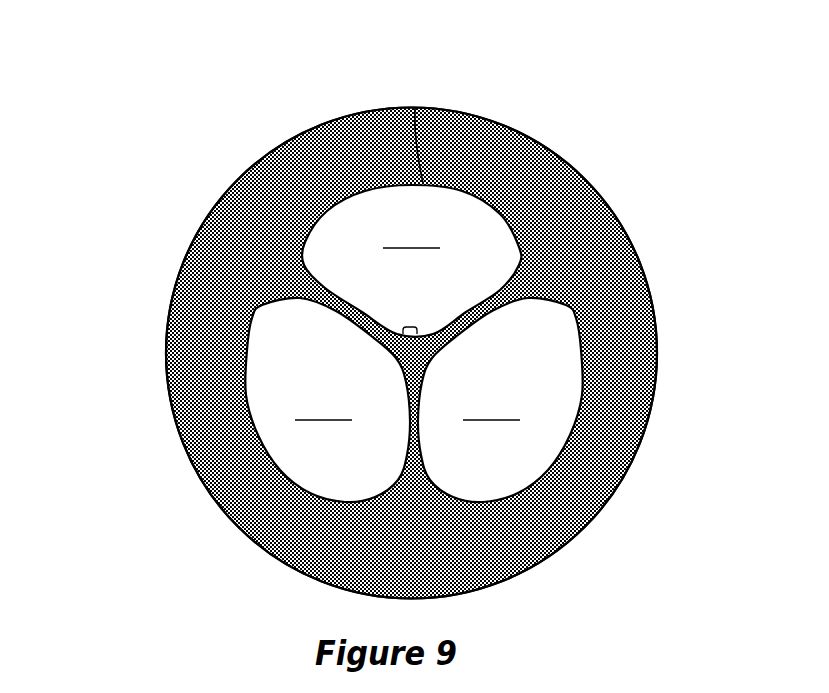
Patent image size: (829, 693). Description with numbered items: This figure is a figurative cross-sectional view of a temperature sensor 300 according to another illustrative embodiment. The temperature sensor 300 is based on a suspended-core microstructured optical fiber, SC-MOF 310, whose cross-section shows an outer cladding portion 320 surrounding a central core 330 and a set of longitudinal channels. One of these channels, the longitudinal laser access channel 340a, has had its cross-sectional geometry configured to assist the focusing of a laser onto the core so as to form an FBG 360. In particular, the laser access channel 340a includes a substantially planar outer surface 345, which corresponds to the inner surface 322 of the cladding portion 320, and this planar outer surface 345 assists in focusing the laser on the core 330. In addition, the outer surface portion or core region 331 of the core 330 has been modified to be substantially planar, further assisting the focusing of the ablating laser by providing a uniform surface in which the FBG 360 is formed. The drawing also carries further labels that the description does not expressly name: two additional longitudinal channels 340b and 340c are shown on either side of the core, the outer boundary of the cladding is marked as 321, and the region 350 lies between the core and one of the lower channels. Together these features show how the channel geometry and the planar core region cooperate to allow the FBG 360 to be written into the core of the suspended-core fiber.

The temperature sensor 300 is at (180, 168).
The SC-MOF 310 is at (560, 148).
The cladding portion 320 is at (603, 250).
The outer layer of wall 321 is at (322, 123).
The inner surface of the cladding portion 322 is at (415, 107).
The planar outer surface 345 is at (415, 107).
The core 330 is at (383, 343).
The core region 331 is at (390, 348).
The longitudinal laser access channel 340a is at (412, 225).
The second lumen 340b is at (301, 403).
The third lumen 340c is at (521, 403).
The divider wall 350 is at (477, 323).
The FBG 360 is at (417, 327).